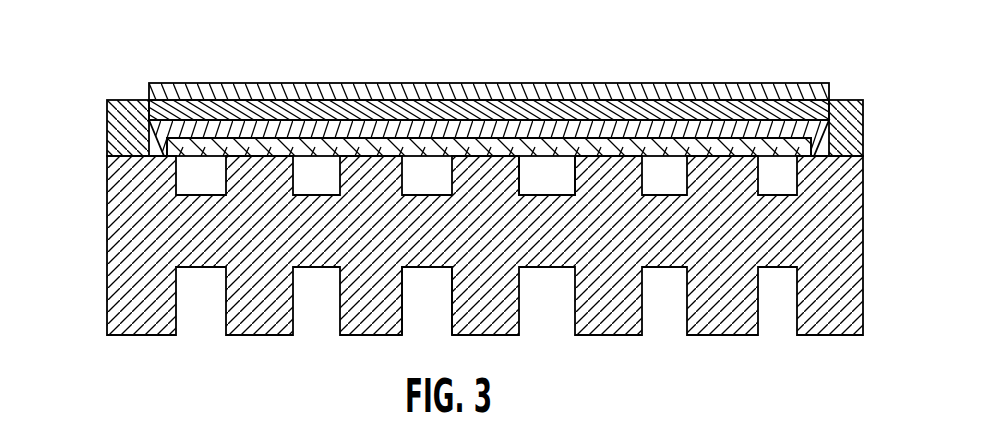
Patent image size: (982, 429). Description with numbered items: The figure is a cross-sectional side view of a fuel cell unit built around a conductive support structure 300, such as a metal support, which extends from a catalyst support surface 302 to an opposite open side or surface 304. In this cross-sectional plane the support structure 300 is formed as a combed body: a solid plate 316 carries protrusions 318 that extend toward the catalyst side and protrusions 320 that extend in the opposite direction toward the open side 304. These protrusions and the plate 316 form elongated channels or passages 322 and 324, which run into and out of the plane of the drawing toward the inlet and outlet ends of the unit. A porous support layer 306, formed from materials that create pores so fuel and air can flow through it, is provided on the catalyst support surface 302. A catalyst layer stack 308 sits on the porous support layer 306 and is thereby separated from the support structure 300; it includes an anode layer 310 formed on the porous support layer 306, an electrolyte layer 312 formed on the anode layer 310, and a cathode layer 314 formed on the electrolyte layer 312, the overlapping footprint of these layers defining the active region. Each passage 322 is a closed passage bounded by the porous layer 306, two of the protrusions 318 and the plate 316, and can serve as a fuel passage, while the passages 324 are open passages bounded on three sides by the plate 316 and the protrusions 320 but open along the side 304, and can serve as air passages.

The support structure 300 is at (107, 239).
The catalyst support surface 302 is at (283, 140).
The opposite side 304 is at (358, 336).
The porous support layer 306 is at (377, 148).
The catalyst layer stack 308 is at (105, 83).
The anode layer 310 is at (455, 133).
The electrolyte layer 312 is at (537, 108).
The cathode layer 314 is at (615, 92).
The solid plate 316 is at (869, 193).
The protrusions 318 is at (378, 162).
The protrusions 320 is at (608, 288).
The passages 322 is at (564, 190).
The passages 324 is at (444, 308).